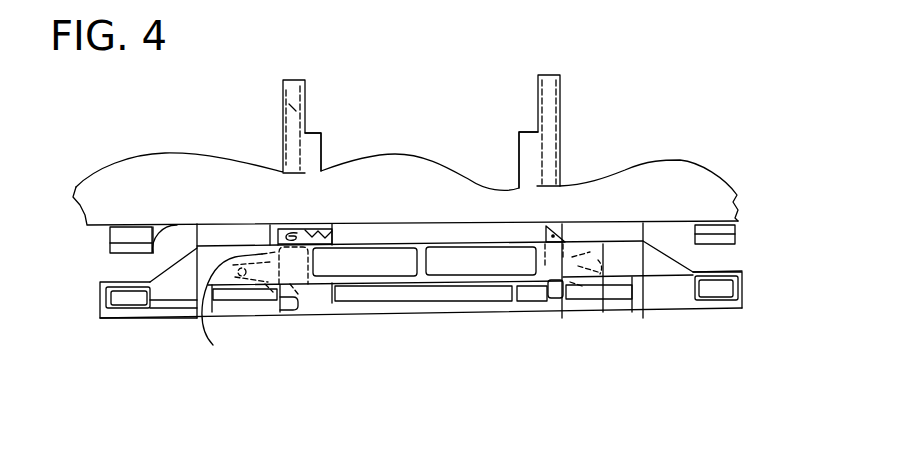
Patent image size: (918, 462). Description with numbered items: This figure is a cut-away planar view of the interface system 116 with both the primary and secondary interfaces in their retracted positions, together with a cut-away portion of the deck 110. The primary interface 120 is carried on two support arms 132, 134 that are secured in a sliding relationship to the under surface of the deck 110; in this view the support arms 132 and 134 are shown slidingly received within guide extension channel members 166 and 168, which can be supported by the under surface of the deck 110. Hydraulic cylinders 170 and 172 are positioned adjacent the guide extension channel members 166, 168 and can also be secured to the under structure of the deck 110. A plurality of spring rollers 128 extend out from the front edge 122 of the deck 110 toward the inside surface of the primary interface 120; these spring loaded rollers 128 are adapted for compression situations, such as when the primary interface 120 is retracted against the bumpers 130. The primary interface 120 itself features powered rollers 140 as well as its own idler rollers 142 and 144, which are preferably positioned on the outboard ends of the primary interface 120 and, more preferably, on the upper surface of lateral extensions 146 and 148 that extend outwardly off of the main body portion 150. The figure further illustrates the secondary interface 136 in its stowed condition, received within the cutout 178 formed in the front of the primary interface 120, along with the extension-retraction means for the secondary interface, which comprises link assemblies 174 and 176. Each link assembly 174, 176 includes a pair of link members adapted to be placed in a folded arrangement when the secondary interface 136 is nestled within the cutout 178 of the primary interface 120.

The deck 110 is at (104, 206).
The interface system 116 is at (758, 218).
The primary interface 120 is at (637, 262).
The front edge 122 is at (160, 267).
The spring rollers 128 is at (108, 238).
The bumpers 130 is at (223, 237).
The support arm 132 is at (545, 80).
The support arm 134 is at (282, 100).
The secondary interface 136 is at (600, 300).
The powered rollers 140 is at (441, 266).
The idler roller 142 is at (127, 298).
The idler roller 144 is at (722, 288).
The lateral extension 146 is at (175, 288).
The lateral extension 148 is at (678, 302).
The main body portion 150 is at (640, 251).
The guide extension channel member 166 is at (306, 107).
The guide extension channel member 168 is at (534, 112).
The hydraulic cylinder 170 is at (320, 133).
The hydraulic cylinder 172 is at (519, 146).
The link assembly 174 is at (255, 308).
The link assembly 176 is at (563, 250).
The cutout 178 is at (626, 300).